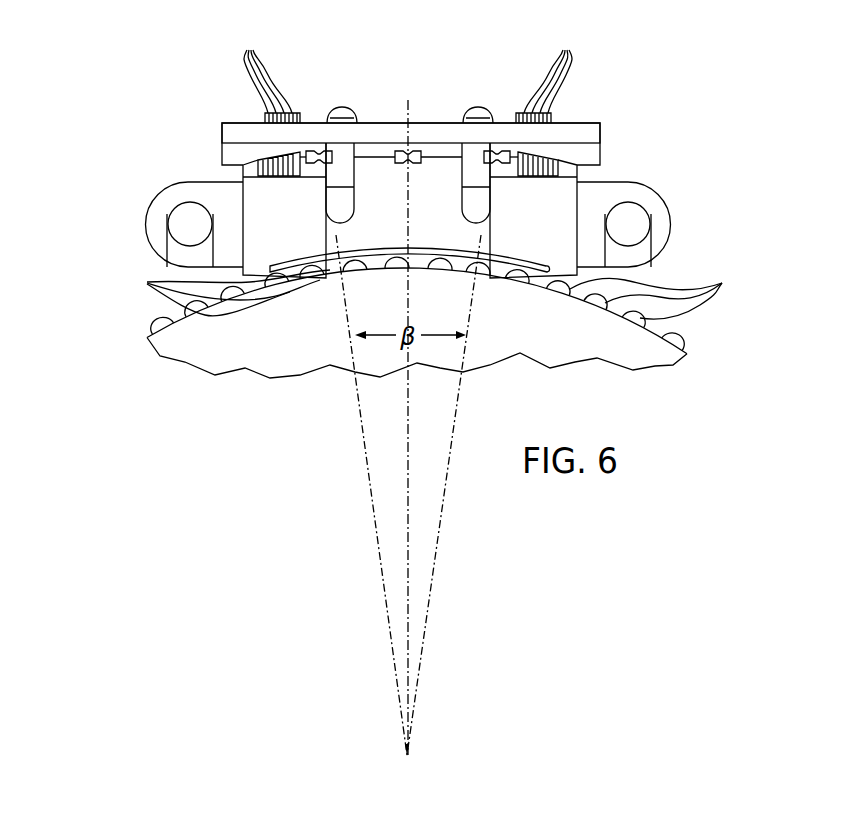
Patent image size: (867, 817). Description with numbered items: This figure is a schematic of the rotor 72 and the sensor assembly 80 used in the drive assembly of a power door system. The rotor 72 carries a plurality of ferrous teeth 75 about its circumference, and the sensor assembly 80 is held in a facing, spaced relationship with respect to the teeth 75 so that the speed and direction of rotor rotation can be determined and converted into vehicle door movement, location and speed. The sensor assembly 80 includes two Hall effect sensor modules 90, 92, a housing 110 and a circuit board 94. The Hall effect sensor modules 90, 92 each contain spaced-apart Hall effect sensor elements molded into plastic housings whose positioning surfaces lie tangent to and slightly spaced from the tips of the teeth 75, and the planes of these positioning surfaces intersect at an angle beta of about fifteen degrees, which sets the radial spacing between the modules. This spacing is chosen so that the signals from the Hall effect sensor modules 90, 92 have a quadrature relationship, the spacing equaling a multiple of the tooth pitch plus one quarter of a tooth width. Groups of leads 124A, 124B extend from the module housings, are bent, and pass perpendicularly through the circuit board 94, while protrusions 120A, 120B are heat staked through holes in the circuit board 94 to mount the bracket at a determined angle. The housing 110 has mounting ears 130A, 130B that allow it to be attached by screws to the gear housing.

The rotor 72 is at (692, 345).
The ferrous teeth 75 is at (147, 282).
The sensor assembly 80 is at (199, 172).
The Hall effect sensor module 90 is at (548, 266).
The Hall effect sensor module 92 is at (270, 268).
The circuit board 94 is at (232, 123).
The housing 110 is at (497, 244).
The protrusion 120A is at (476, 107).
The protrusion 120B is at (338, 107).
The group of leads 124A is at (561, 72).
The group of leads 124B is at (259, 70).
The mounting ear 130A is at (650, 182).
The mounting ear 130B is at (150, 205).